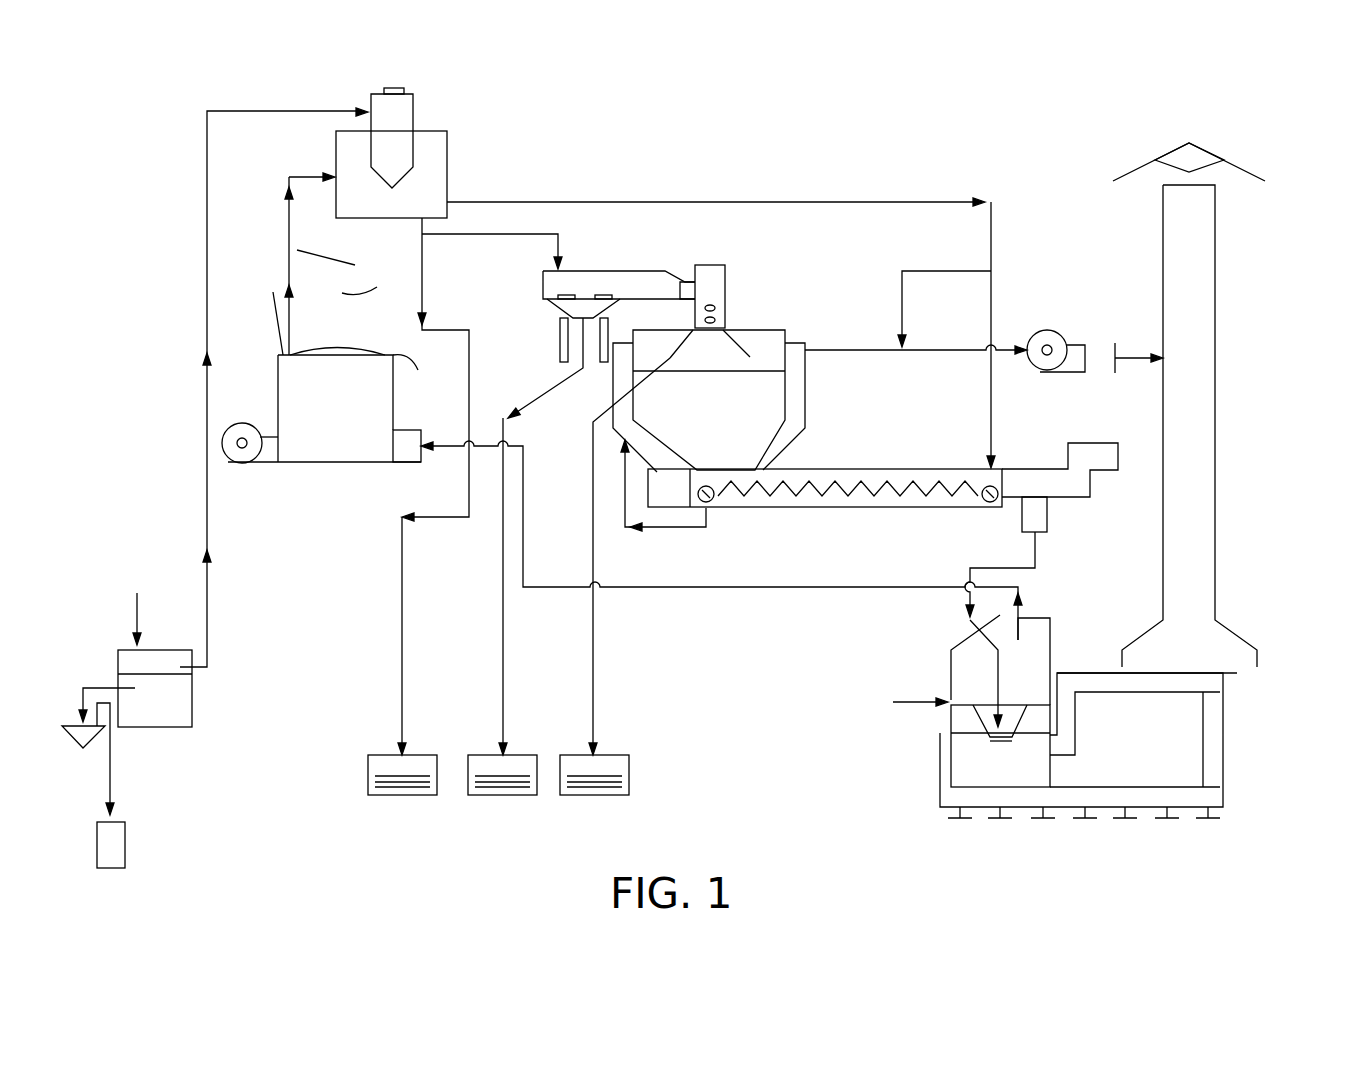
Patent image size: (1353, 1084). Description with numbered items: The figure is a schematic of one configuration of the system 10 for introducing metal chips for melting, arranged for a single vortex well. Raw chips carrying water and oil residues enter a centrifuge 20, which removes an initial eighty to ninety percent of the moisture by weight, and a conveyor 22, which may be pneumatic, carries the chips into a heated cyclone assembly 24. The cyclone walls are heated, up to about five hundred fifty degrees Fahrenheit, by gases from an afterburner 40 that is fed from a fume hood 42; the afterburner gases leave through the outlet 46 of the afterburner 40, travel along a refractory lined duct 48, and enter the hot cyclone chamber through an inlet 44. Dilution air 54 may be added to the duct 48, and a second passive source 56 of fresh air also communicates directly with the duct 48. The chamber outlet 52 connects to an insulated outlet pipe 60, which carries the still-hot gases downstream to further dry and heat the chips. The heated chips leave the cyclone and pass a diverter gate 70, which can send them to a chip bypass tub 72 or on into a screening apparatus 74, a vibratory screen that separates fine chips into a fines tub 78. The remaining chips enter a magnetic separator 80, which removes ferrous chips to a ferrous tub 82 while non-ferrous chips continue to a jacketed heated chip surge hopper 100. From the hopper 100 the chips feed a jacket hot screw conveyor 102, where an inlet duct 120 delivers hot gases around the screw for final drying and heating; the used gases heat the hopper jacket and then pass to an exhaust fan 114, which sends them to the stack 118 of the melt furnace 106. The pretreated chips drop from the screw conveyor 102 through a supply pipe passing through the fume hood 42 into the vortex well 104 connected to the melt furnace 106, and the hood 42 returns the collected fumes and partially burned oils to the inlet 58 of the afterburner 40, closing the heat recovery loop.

The system for introducing metal chips for melting 10 is at (1012, 162).
The centrifuge 20 is at (178, 697).
The conveyor 22 is at (207, 185).
The heated cyclone assembly 24 is at (432, 165).
The afterburner 40 is at (282, 353).
The fume hood 42 is at (1050, 652).
The inlet 44 is at (335, 177).
The outlet 46 is at (419, 368).
The refractory lined duct 48 is at (289, 243).
The outlet 52 is at (453, 201).
The dilution air 54 is at (348, 252).
The second passive source of fresh air 56 is at (367, 280).
The inlet 58 is at (412, 457).
The insulated outlet pipe 60 is at (800, 200).
The diverter gate 70 is at (422, 240).
The chip bypass tub 72 is at (368, 773).
The screening apparatus 74 is at (545, 285).
The fines tub 78 is at (468, 765).
The magnetic separator 80 is at (714, 300).
The ferrous tub 82 is at (629, 768).
The jacketed heated chip surge hopper 100 is at (765, 345).
The jacket hot screw conveyor 102 is at (937, 507).
The vortex well 104 is at (940, 770).
The melt furnace 106 is at (1212, 775).
The exhaust fan 114 is at (1070, 372).
The stack 118 is at (1227, 478).
The inlet duct 120 is at (978, 470).